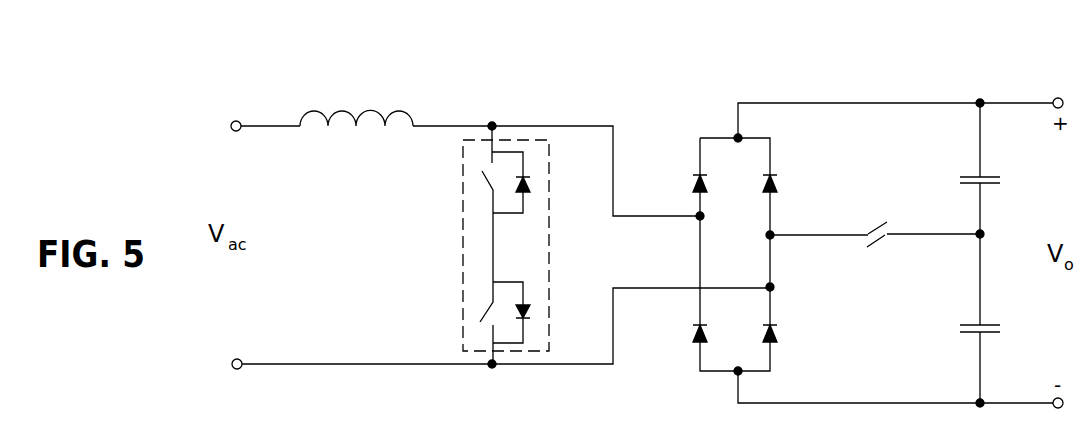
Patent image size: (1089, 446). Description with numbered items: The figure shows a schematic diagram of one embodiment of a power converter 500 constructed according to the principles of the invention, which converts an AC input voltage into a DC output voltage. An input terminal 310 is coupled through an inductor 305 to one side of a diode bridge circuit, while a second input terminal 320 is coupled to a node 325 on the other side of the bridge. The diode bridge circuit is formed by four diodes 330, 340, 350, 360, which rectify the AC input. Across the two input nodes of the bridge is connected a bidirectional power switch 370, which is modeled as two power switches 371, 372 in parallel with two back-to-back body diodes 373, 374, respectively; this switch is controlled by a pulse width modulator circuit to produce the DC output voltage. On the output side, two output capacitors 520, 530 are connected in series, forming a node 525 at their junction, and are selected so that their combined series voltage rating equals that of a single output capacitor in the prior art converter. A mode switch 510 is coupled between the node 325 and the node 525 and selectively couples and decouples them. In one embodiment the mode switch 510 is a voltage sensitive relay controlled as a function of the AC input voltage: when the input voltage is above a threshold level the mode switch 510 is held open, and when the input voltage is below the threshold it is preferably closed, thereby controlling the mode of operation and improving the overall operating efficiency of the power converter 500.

The inductor 305 is at (372, 88).
The input terminal 310 is at (236, 121).
The input terminal 320 is at (237, 359).
The node 325 is at (773, 232).
The diode 330 is at (691, 182).
The diode 340 is at (781, 185).
The diode 350 is at (781, 335).
The diode 360 is at (691, 332).
The bidirectional power switch 370 is at (545, 260).
The power switch 371 is at (482, 172).
The power switch 372 is at (480, 320).
The body diode 373 is at (532, 185).
The body diode 374 is at (533, 316).
The power converter 500 is at (677, 89).
The mode switch 510 is at (884, 249).
The output capacitor 520 is at (958, 169).
The node 525 is at (985, 232).
The output capacitor 530 is at (958, 343).